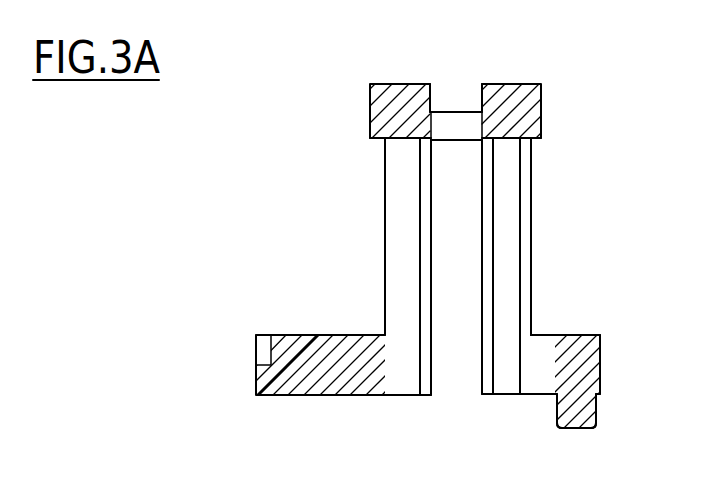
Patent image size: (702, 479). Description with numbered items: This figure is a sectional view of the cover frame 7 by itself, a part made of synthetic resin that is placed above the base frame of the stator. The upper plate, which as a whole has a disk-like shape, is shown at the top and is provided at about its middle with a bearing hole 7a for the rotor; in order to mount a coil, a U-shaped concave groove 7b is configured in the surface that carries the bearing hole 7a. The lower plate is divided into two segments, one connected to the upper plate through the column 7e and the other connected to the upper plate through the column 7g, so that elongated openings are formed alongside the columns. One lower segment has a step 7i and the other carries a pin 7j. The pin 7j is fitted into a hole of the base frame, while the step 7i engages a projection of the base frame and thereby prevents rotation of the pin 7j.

The cover frame 7 is at (578, 142).
The bearing hole 7a is at (450, 123).
The U-shaped concave groove 7b is at (465, 100).
The column 7e is at (398, 210).
The column 7g is at (502, 203).
The step 7i is at (258, 350).
The pin 7j is at (585, 407).